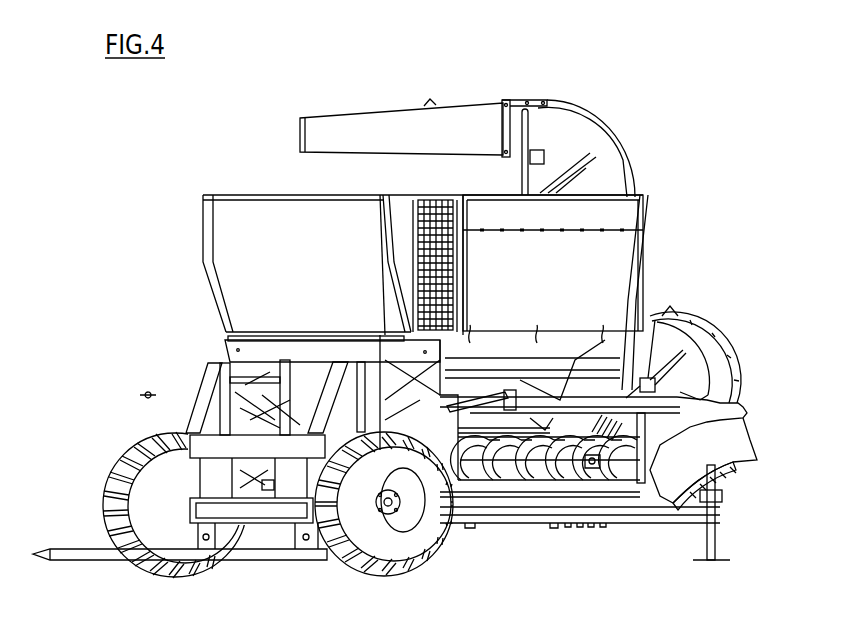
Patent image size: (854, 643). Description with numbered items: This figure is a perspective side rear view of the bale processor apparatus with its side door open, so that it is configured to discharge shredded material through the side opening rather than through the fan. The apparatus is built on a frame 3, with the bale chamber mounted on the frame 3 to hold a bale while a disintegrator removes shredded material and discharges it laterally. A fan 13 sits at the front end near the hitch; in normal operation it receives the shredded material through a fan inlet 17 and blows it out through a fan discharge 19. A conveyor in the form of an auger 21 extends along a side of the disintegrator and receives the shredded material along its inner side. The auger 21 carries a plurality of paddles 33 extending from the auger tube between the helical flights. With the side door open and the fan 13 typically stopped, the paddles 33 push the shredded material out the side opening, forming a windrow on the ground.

The frame 3 is at (264, 523).
The fan 13 is at (710, 322).
The fan inlet 17 is at (747, 420).
The fan discharge 19 is at (362, 117).
The auger 21 is at (593, 458).
The paddles 33 is at (552, 480).